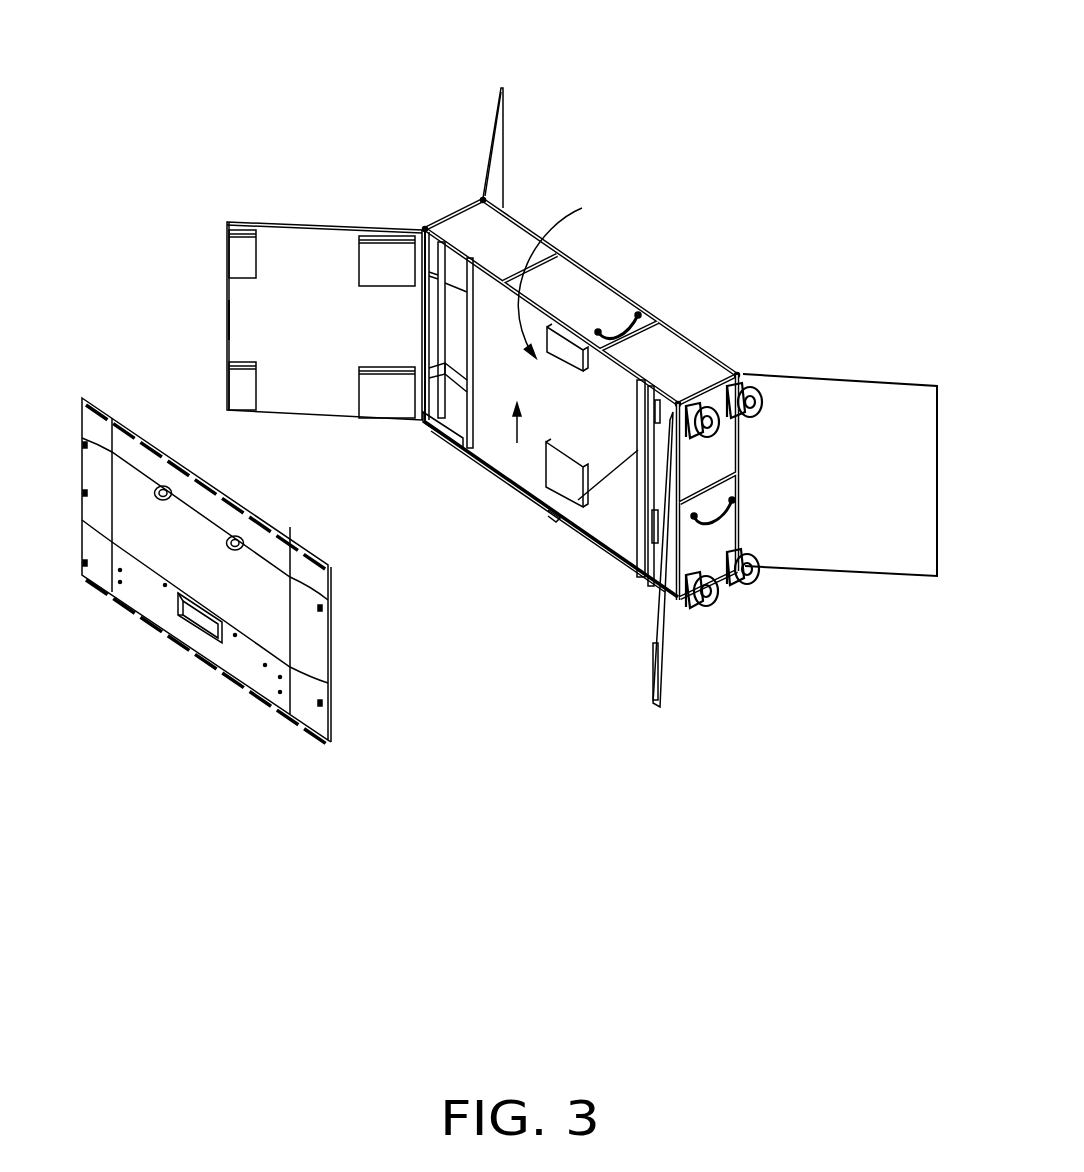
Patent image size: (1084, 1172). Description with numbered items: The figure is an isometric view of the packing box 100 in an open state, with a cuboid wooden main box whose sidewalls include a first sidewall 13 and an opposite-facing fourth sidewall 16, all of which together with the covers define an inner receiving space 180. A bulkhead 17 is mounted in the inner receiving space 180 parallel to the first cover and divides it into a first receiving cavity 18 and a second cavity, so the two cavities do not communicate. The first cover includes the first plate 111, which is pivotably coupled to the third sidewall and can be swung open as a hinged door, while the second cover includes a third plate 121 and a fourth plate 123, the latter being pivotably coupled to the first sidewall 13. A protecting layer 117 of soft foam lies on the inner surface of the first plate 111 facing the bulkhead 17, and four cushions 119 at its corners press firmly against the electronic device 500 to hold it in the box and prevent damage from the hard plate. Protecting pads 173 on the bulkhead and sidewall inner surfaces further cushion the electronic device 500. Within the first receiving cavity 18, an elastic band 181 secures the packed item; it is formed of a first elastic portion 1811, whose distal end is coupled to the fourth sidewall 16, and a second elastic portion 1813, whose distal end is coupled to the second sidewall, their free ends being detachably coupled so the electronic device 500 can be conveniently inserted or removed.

The packing box 100 is at (356, 74).
The first plate 111 is at (274, 289).
The protecting layer 117 is at (243, 313).
The cushions 119 is at (245, 255).
The third plate 121 is at (497, 170).
The fourth plate 123 is at (830, 408).
The first sidewall 13 is at (708, 458).
The fourth sidewall 16 is at (682, 362).
The bulkhead 17 is at (467, 452).
The first receiving cavity 18 is at (505, 397).
The protecting pads 173 is at (570, 350).
The inner receiving space 180 is at (576, 272).
The elastic band 181 is at (575, 543).
The first elastic portion 1811 is at (555, 520).
The second elastic portion 1813 is at (640, 513).
The electronic device 500 is at (258, 666).